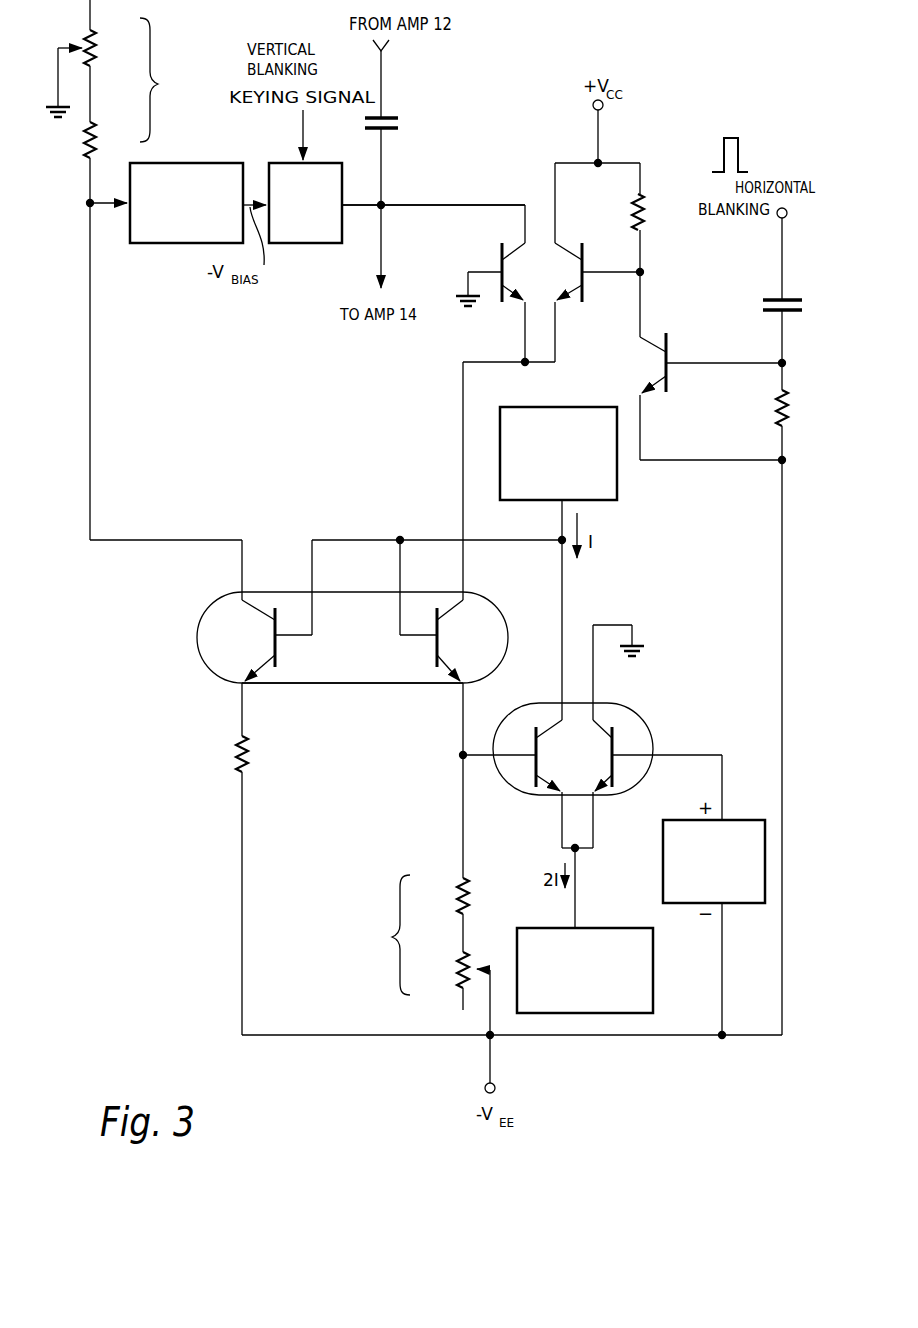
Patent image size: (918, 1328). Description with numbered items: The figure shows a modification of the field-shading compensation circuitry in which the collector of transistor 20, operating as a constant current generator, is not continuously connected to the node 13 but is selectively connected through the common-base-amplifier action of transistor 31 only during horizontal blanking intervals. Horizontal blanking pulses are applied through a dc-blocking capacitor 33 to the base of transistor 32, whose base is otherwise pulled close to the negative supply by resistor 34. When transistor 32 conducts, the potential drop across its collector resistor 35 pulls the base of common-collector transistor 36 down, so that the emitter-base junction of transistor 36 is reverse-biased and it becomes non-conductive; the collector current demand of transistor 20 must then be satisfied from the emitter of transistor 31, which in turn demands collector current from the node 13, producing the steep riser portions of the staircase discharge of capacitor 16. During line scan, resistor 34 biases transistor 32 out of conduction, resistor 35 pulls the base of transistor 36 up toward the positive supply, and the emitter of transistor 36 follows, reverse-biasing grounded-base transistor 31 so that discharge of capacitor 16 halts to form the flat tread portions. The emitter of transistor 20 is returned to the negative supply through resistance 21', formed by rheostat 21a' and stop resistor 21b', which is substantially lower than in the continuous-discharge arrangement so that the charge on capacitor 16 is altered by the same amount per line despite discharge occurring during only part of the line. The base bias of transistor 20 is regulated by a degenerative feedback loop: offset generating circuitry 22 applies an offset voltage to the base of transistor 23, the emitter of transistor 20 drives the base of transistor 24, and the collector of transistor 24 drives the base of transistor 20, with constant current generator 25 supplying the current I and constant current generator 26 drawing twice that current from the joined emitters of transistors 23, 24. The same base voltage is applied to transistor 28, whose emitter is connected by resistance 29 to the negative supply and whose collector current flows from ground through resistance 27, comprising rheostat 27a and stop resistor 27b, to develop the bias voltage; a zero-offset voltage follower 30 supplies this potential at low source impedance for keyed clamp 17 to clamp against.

The node 13 is at (383, 203).
The capacitor 16 is at (399, 125).
The keyed clamp 17 is at (308, 243).
The transistor 20 is at (440, 640).
The resistance 21' is at (388, 935).
The rheostat 21a' is at (451, 970).
The stop resistor 21b' is at (440, 901).
The offset generating circuitry 22 is at (663, 844).
The transistor 23 is at (605, 770).
The transistor 24 is at (557, 770).
The constant current generator 25 is at (618, 476).
The constant current generator 26 is at (653, 984).
The resistance 27 is at (164, 80).
The rheostat 27a is at (114, 48).
The stop resistor 27b is at (115, 140).
The transistor 28 is at (352, 637).
The resistance 29 is at (234, 757).
The zero-offset voltage follower 30 is at (195, 163).
The transistor 31 is at (531, 286).
The transistor 32 is at (664, 364).
The dc-blocking capacitor 33 is at (766, 306).
The resistor 34 is at (776, 410).
The collector resistor 35 is at (634, 214).
The transistor 36 is at (572, 286).